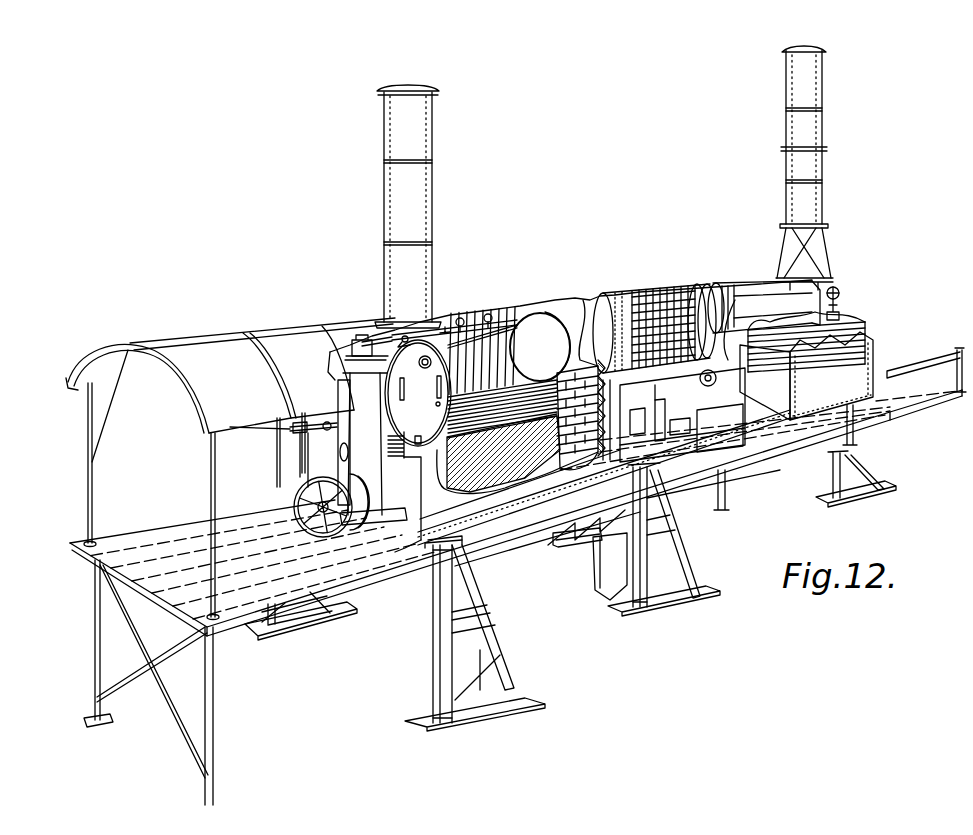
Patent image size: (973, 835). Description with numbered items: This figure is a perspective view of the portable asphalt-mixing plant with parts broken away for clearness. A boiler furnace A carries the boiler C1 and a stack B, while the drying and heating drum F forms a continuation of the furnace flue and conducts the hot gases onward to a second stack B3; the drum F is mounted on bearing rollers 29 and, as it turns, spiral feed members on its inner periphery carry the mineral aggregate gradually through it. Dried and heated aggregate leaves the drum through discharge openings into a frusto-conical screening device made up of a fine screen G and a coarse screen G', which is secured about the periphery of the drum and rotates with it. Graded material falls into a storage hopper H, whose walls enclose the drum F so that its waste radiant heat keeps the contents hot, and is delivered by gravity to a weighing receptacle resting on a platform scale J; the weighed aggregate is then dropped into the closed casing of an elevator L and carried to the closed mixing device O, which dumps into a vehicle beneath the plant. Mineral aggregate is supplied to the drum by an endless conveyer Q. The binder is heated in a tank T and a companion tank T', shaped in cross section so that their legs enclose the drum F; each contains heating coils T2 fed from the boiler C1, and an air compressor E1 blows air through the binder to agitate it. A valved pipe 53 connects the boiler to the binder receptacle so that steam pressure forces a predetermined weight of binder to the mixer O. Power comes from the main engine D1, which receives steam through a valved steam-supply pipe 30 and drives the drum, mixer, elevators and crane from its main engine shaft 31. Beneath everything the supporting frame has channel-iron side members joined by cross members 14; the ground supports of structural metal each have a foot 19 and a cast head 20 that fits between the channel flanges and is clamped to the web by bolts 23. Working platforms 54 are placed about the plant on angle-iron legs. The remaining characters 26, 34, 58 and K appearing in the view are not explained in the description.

The storage hopper H is at (170, 344).
The stack B is at (434, 251).
The stack B3 is at (785, 209).
The boiler shell opening 26 is at (556, 337).
The fine screen G is at (651, 322).
The coarse screen G' is at (693, 314).
The bearing rollers 29 is at (733, 294).
The hand wheel 34 is at (837, 289).
The endless conveyer Q is at (838, 306).
The valved steam-supply pipe 30 is at (406, 342).
The air compressor E1 is at (418, 393).
The boiler C1 is at (502, 372).
The main engine D1 is at (379, 437).
The boiler furnace A is at (398, 637).
The drum F is at (764, 307).
The closed mixing device O is at (674, 415).
The tank T is at (806, 376).
The heating coils T2 is at (806, 345).
The tank T' is at (926, 368).
The main engine shaft 31 is at (323, 514).
The pipe 53 is at (417, 515).
The working platforms 54 is at (242, 608).
The corner post 58 is at (214, 735).
The foot 19 is at (340, 607).
The head 20 is at (448, 558).
The cross members 14 is at (430, 576).
The bolts 23 is at (433, 568).
The platform scale J is at (573, 552).
The hopper K is at (613, 570).
The elevator L is at (617, 518).